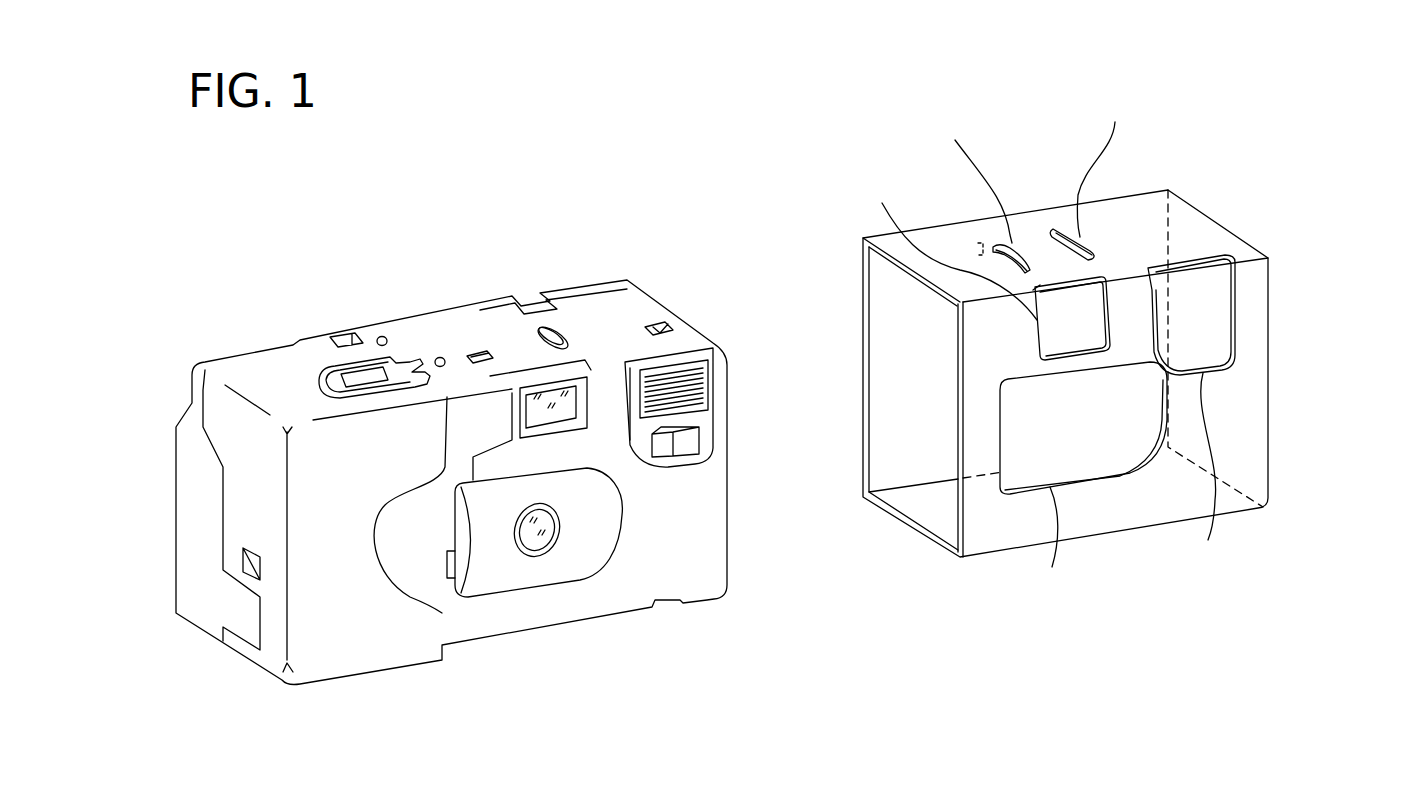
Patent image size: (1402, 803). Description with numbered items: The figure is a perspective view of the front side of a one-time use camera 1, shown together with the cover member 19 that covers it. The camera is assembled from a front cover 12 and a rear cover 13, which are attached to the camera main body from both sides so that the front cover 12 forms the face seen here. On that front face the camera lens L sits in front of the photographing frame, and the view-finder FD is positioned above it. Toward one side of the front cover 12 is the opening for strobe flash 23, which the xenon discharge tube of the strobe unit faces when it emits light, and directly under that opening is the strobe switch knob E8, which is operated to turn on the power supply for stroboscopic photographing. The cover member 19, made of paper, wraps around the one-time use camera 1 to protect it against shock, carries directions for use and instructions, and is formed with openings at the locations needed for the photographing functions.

The one-time use camera 1 is at (438, 285).
The front cover 12 is at (377, 672).
The rear cover 13 is at (176, 537).
The view-finder FD is at (553, 398).
The opening for strobe flash 23 is at (700, 375).
The strobe switch knob E8 is at (700, 438).
The camera lens L is at (527, 541).
The cover member 19 is at (1053, 207).